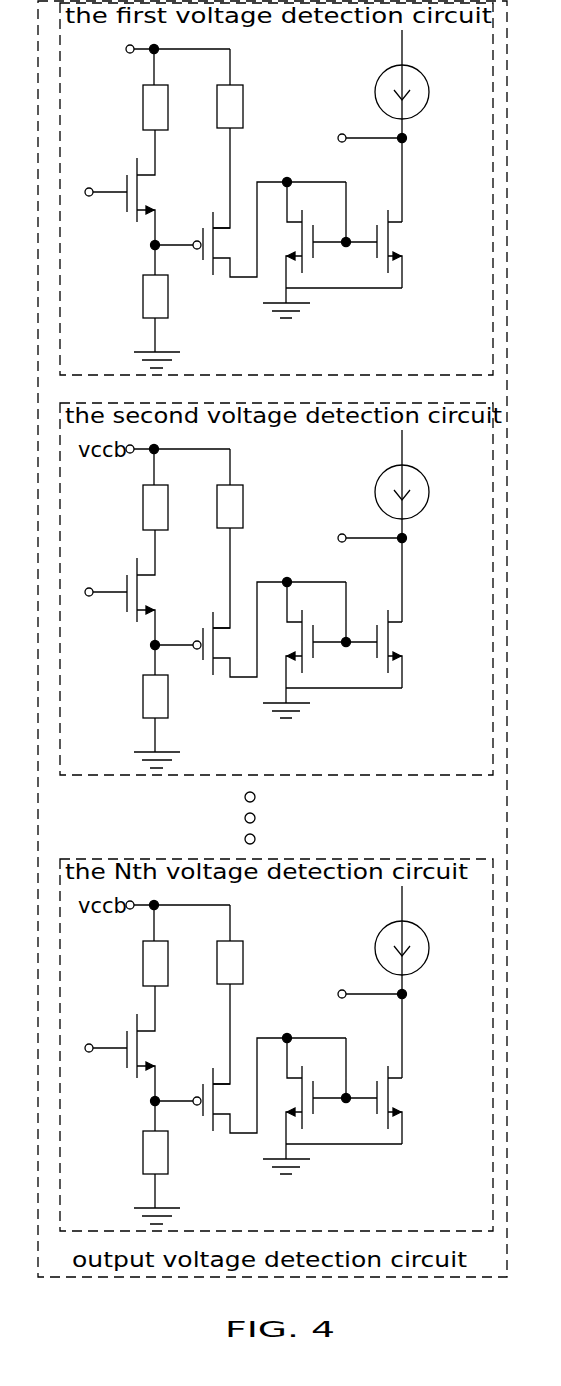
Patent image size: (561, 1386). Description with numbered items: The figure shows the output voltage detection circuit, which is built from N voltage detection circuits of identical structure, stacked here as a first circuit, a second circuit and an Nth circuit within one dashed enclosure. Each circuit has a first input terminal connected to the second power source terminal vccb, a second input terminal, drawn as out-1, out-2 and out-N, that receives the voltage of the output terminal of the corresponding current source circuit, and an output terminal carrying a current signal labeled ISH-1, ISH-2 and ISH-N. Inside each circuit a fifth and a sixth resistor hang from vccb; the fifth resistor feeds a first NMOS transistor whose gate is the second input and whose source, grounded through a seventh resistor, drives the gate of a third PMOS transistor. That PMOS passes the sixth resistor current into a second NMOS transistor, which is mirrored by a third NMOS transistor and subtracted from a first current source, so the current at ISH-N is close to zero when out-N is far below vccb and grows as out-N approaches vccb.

The second power source terminal vccb is at (154, 61).
The first current signal ISH-1 is at (341, 141).
The second input terminal of the first voltage detection circuit out-1 is at (98, 178).
The second current signal ISH-2 is at (341, 541).
The second input terminal of the second voltage detection circuit out-2 is at (98, 578).
The Nth current signal ISH-N is at (335, 997).
The second input terminal of the Nth voltage detection circuit out-N is at (95, 1034).